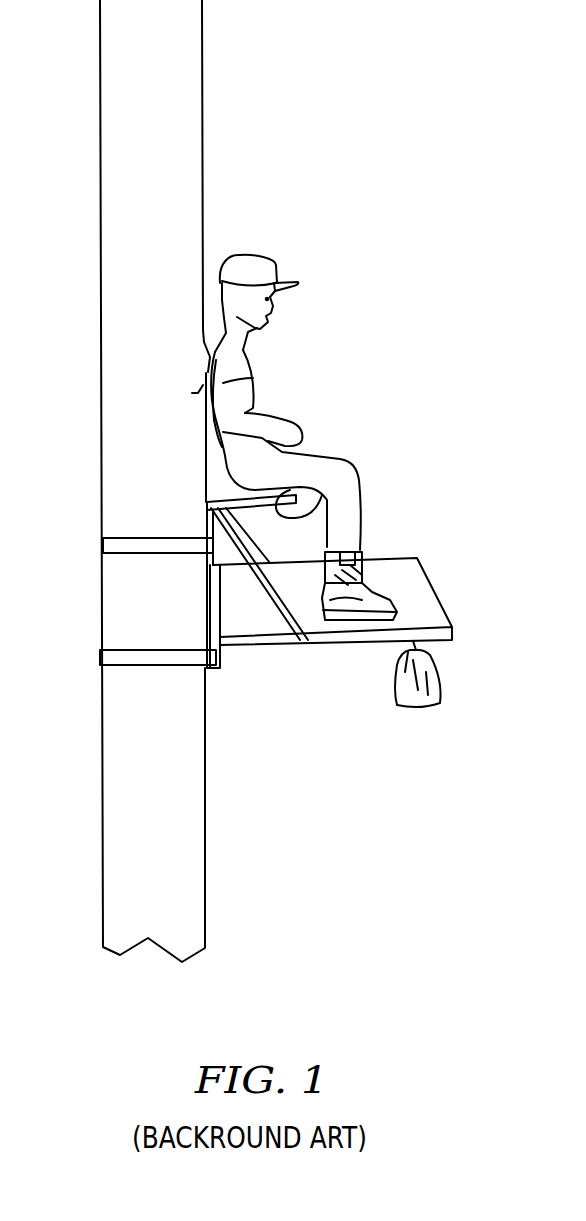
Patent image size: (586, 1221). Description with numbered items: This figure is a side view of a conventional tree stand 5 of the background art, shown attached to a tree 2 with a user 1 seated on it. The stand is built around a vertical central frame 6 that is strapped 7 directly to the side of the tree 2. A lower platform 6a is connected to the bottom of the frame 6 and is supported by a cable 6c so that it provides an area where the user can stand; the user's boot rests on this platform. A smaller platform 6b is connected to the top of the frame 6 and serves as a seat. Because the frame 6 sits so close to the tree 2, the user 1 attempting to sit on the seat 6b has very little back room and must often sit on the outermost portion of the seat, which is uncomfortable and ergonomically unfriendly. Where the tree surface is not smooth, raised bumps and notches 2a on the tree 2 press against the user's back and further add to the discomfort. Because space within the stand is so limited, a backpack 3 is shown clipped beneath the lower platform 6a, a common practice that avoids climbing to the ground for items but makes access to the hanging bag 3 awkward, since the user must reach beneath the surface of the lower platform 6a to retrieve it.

The user 1 is at (302, 367).
The tree 2 is at (165, 82).
The raised bumps and notches 2a is at (196, 364).
The backpack 3 is at (433, 694).
The tree stand 5 is at (446, 521).
The vertical central frame 6 is at (213, 593).
The lower platform 6a is at (420, 590).
The smaller platform (seat) 6b is at (299, 502).
The cable 6c is at (272, 588).
The strap 7 is at (127, 547).